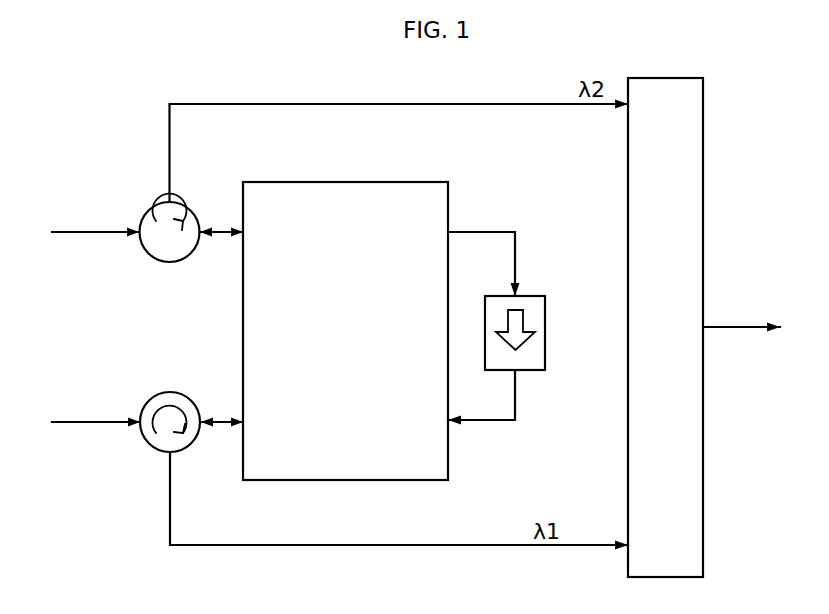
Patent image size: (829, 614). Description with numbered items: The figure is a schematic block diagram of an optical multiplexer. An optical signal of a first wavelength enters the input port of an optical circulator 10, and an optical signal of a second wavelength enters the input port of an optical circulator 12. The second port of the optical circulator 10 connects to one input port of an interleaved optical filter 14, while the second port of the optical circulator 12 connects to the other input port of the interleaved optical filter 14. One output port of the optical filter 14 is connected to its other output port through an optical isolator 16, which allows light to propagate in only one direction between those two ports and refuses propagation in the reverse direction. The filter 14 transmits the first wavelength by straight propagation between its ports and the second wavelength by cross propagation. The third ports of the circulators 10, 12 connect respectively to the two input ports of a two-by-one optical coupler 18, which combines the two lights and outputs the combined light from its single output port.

The optical circulator 10 is at (169, 262).
The optical circulator 12 is at (169, 392).
The interleaved optical filter 14 is at (352, 195).
The optical isolator 16 is at (545, 336).
The 2×1 optical coupler 18 is at (693, 184).